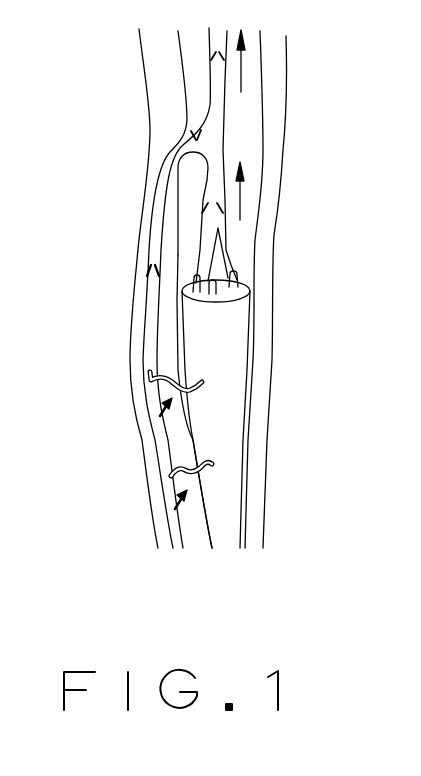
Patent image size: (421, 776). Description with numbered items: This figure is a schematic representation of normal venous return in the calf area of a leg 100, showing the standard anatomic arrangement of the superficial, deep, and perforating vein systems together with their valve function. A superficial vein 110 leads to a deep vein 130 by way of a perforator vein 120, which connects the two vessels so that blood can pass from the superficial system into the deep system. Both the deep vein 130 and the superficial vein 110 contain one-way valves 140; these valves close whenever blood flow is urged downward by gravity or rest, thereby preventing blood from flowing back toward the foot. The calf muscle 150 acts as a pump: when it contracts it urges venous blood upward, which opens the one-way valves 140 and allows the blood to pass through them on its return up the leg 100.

The leg 100 is at (283, 97).
The superficial vein 110 is at (153, 250).
The perforator vein 120 is at (183, 470).
The deep vein 130 is at (213, 79).
The one-way valves 140 is at (212, 204).
The calf muscle 150 is at (198, 338).